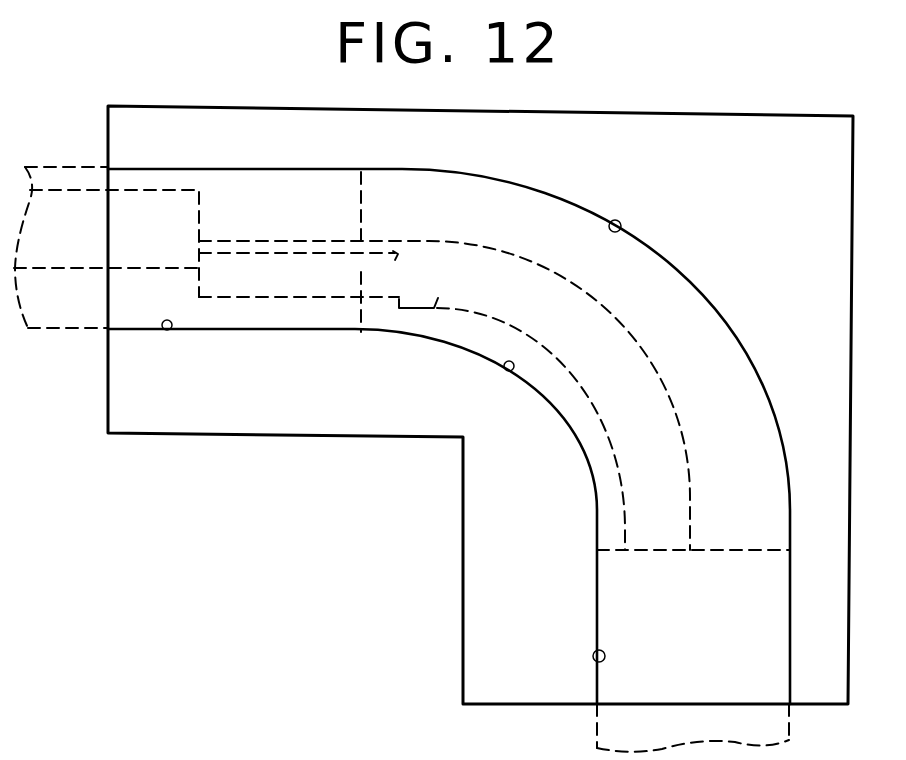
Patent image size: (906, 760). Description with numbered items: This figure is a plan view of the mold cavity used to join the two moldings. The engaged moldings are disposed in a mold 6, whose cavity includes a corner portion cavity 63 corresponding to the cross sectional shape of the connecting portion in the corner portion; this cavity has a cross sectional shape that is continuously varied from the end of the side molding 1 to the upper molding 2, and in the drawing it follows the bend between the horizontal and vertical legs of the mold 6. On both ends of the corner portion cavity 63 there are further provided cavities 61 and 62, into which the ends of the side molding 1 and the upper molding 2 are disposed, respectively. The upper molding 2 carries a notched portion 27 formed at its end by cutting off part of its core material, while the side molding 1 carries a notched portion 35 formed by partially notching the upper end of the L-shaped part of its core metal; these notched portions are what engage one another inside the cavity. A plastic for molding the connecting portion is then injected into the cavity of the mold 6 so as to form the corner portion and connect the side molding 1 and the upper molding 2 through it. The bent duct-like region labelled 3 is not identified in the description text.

The side molding 1 is at (602, 719).
The upper molding 2 is at (54, 322).
The bent duct portion 3 is at (657, 354).
The mold 6 is at (295, 437).
The notched portion 27 is at (328, 242).
The notched portion 35 is at (267, 253).
The cavity 61 is at (596, 662).
The cavity 62 is at (168, 330).
The corner portion cavity 63 is at (628, 230).